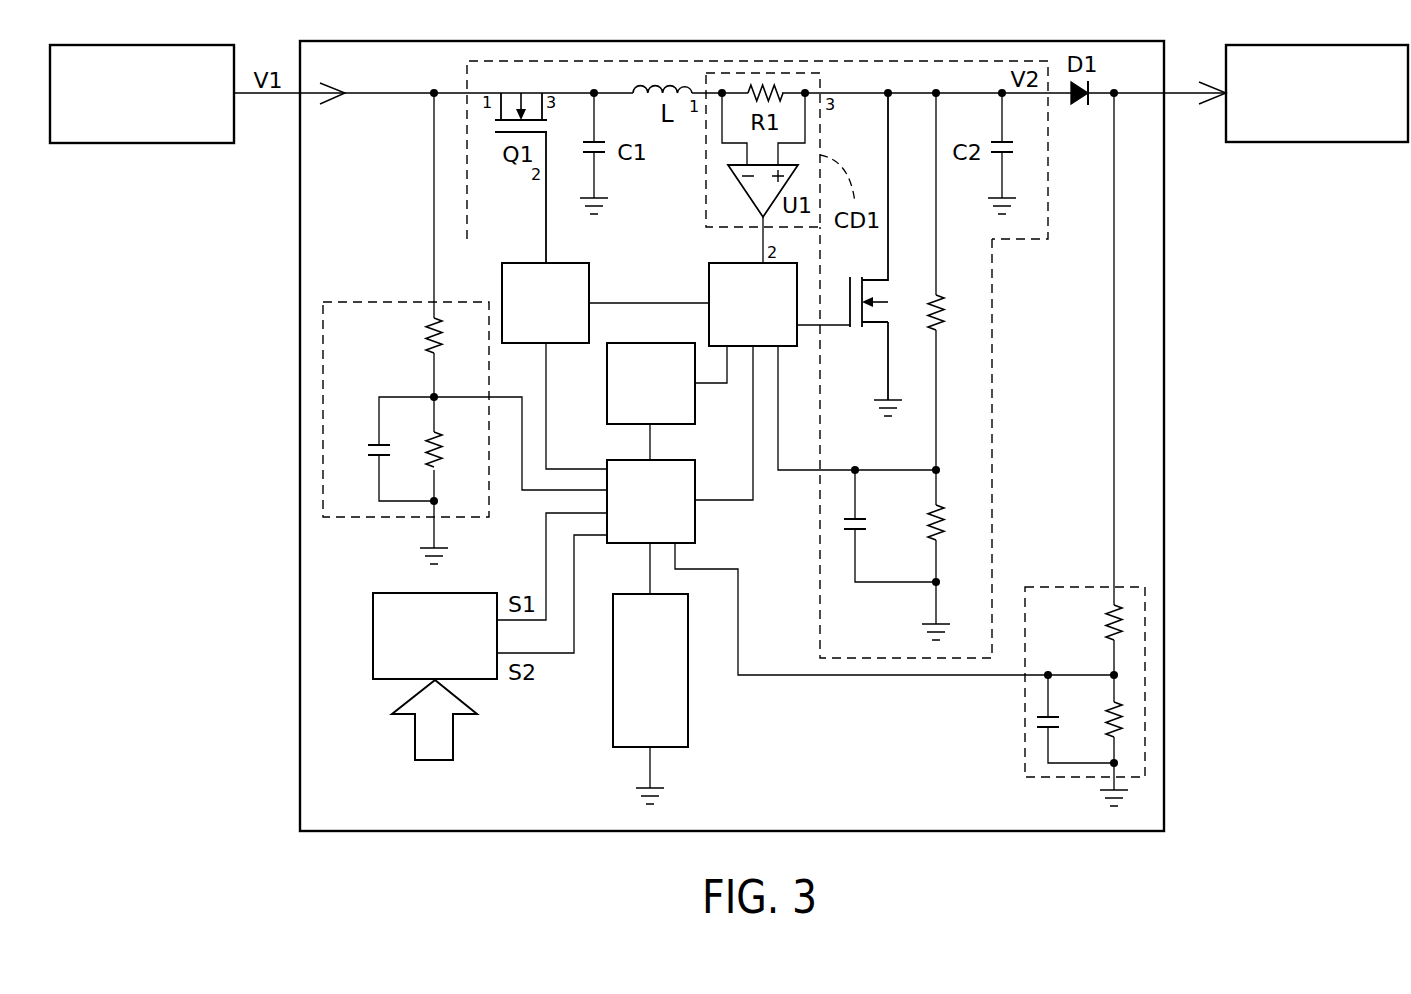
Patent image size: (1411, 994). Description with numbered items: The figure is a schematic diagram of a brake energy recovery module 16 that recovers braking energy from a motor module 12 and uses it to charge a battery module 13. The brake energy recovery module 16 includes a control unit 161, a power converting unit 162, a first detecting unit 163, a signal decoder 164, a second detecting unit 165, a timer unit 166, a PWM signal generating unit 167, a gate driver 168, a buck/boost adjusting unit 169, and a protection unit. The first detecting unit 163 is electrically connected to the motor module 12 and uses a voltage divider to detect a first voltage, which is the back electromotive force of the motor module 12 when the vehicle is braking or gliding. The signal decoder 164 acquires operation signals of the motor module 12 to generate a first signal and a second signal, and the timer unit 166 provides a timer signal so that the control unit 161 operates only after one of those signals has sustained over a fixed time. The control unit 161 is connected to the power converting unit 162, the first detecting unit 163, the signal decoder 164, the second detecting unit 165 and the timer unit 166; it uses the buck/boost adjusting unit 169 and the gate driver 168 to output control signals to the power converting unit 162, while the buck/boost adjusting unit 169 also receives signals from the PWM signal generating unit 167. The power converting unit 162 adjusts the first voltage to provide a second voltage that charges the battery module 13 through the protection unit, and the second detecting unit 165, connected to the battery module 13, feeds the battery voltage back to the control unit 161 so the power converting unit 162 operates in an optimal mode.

The motor module 12 is at (140, 143).
The battery module 13 is at (1321, 143).
The brake energy recovery module 16 is at (1164, 432).
The control unit 161 is at (695, 528).
The power converting unit 162 is at (992, 370).
The first detecting unit 163 is at (380, 300).
The signal decoder 164 is at (373, 630).
The second detecting unit 165 is at (1070, 587).
The timer unit 166 is at (688, 710).
The PWM signal generating unit 167 is at (695, 402).
The gate driver 168 is at (518, 263).
The buck/boost adjusting unit 169 is at (709, 278).